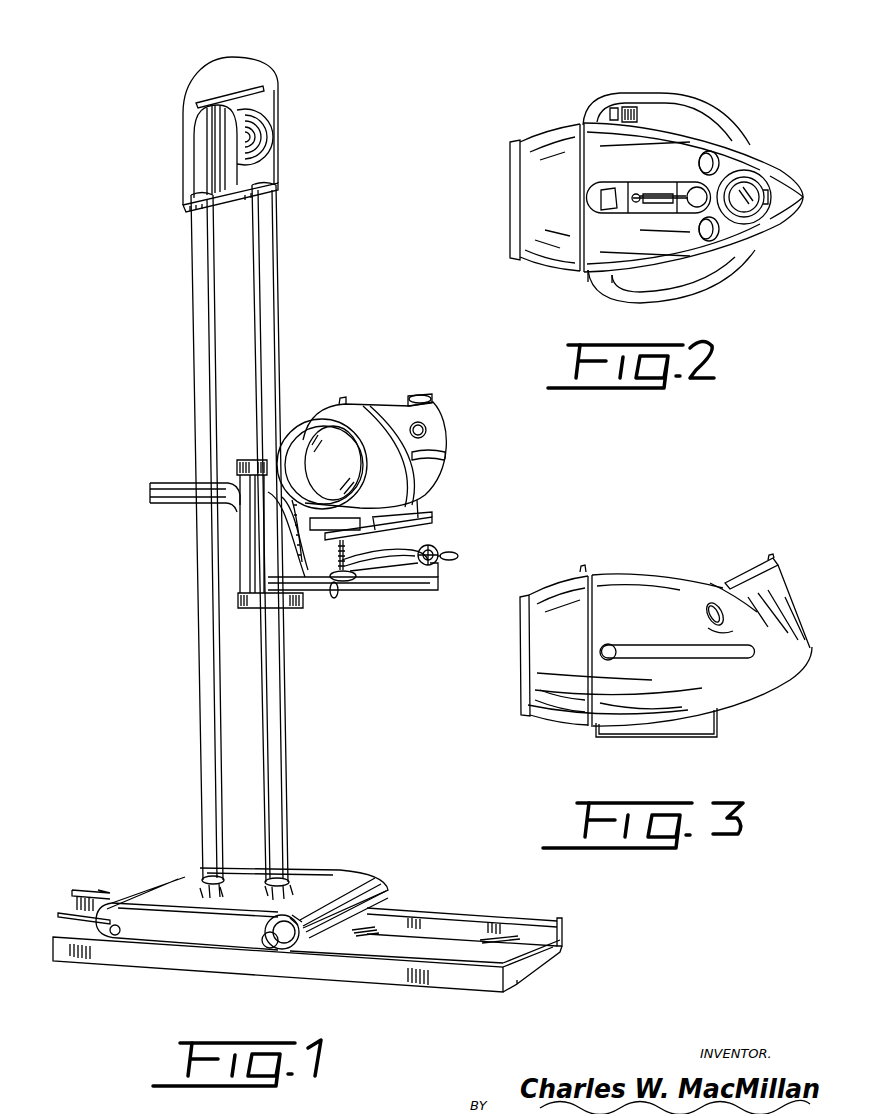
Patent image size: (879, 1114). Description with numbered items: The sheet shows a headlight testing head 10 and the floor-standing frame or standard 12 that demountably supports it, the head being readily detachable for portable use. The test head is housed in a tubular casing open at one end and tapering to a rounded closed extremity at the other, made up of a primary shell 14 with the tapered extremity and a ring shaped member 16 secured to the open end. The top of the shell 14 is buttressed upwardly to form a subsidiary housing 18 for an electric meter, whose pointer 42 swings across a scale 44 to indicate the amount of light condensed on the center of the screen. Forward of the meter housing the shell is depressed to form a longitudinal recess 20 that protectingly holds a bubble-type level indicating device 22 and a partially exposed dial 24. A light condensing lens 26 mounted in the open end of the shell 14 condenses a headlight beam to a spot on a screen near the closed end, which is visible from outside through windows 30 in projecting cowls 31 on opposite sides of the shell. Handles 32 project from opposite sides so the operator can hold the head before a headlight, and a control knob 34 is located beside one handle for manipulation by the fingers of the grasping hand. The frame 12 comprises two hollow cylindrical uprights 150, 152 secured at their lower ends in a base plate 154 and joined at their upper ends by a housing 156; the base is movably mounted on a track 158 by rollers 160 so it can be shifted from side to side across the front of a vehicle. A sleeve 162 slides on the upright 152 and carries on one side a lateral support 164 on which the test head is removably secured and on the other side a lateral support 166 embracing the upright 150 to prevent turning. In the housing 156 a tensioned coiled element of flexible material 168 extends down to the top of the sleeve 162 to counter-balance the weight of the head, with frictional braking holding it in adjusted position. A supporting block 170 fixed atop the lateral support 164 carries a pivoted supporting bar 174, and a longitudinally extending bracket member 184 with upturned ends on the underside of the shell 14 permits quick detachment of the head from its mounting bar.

In FIG. 1, the headlight testing head 10 is at (469, 431).
In FIG. 2, the headlight testing head 10 is at (502, 103).
In FIG. 3, the headlight testing head 10 is at (547, 553).
In FIG. 1, the frame or standard 12 is at (157, 758).
In FIG. 1, the primary shell 14 is at (398, 408).
In FIG. 2, the primary shell 14 is at (672, 147).
In FIG. 3, the primary shell 14 is at (625, 580).
In FIG. 1, the ring shaped member 16 is at (337, 408).
In FIG. 2, the ring shaped member 16 is at (530, 170).
In FIG. 3, the ring shaped member 16 is at (565, 735).
In FIG. 1, the subsidiary housing 18 is at (436, 405).
In FIG. 2, the subsidiary housing 18 is at (788, 210).
In FIG. 3, the subsidiary housing 18 is at (782, 575).
In FIG. 2, the longitudinal recess 20 is at (648, 243).
In FIG. 2, the level indicating device 22 is at (668, 205).
In FIG. 2, the dial 24 is at (615, 157).
In FIG. 1, the light condensing lens 26 is at (303, 440).
In FIG. 3, the windows 30 is at (711, 603).
In FIG. 2, the projecting cowls 31 is at (722, 160).
In FIG. 3, the projecting cowls 31 is at (724, 604).
In FIG. 2, the handles 32 is at (630, 92).
In FIG. 3, the handles 32 is at (678, 655).
In FIG. 2, the control knob 34 is at (640, 107).
In FIG. 2, the pointer 42 is at (740, 185).
In FIG. 2, the scale 44 is at (755, 188).
In FIG. 1, the upright 150 is at (208, 660).
In FIG. 1, the upright 152 is at (283, 705).
In FIG. 1, the base plate 154 is at (307, 882).
In FIG. 1, the housing 156 is at (187, 133).
In FIG. 1, the track 158 is at (360, 958).
In FIG. 1, the rollers 160 is at (290, 947).
In FIG. 1, the sleeve 162 is at (240, 578).
In FIG. 1, the lateral support 164 is at (345, 595).
In FIG. 1, the lateral support 166 is at (185, 495).
In FIG. 1, the coiled element of flexible material 168 is at (252, 135).
In FIG. 1, the supporting block 170 is at (402, 585).
In FIG. 1, the supporting bar 174 is at (395, 590).
In FIG. 3, the bracket member 184 is at (672, 735).